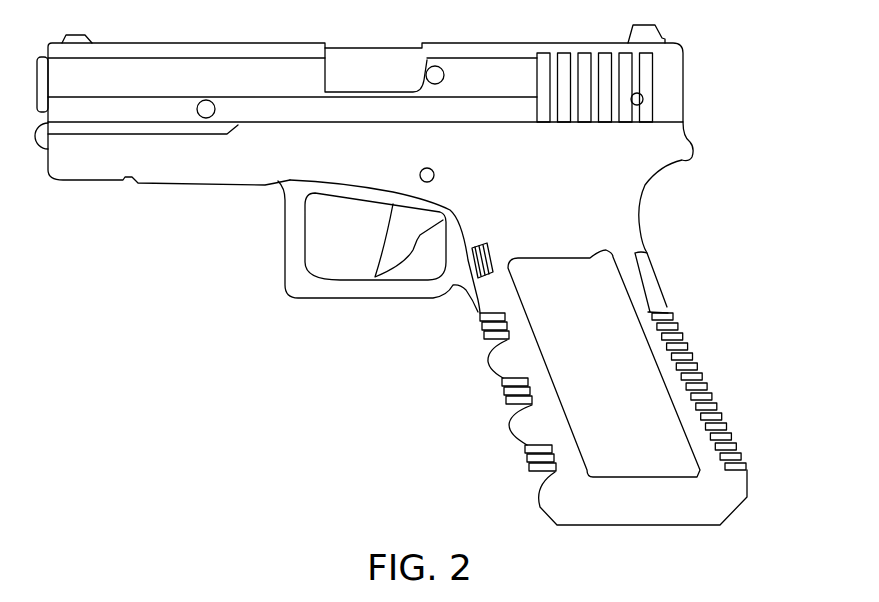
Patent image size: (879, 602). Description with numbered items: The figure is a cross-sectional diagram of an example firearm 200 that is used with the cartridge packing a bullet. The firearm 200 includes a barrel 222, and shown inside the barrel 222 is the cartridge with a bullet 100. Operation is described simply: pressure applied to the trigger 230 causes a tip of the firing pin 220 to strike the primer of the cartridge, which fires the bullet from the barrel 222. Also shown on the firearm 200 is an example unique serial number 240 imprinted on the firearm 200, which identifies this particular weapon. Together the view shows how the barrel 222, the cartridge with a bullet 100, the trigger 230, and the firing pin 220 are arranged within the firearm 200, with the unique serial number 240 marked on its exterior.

The cartridge with a bullet 100 is at (383, 75).
The firearm 200 is at (743, 227).
The firing pin 220 is at (483, 78).
The barrel 222 is at (436, 65).
The trigger 230 is at (389, 242).
The unique serial number 240 is at (102, 172).